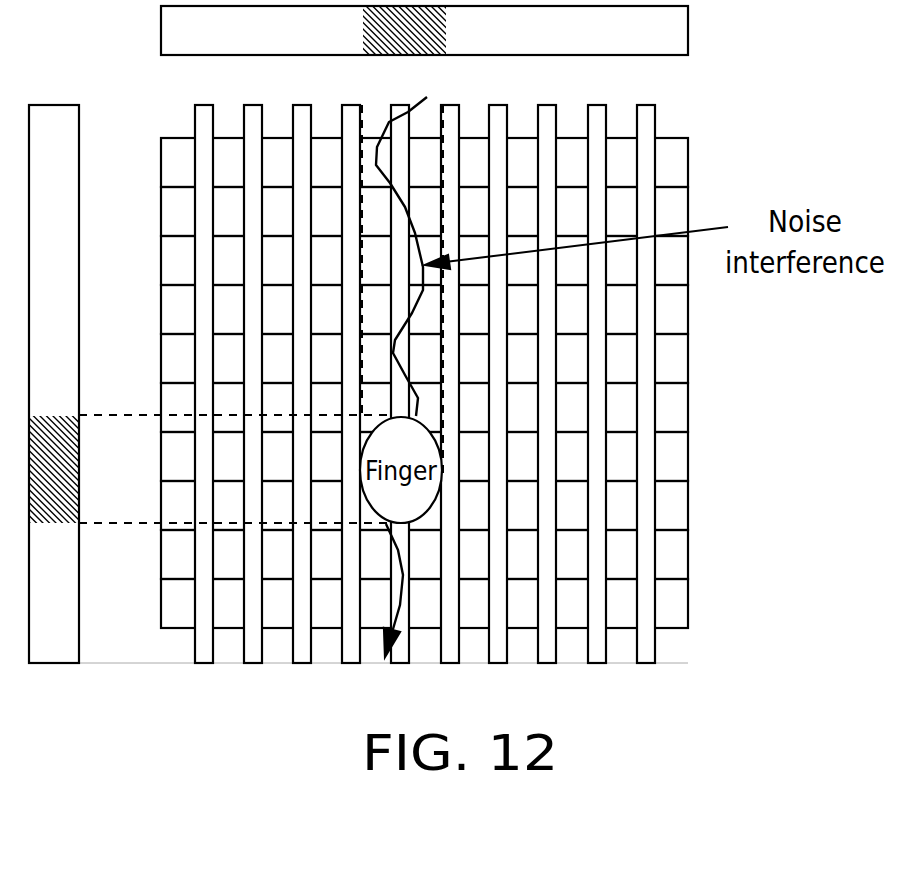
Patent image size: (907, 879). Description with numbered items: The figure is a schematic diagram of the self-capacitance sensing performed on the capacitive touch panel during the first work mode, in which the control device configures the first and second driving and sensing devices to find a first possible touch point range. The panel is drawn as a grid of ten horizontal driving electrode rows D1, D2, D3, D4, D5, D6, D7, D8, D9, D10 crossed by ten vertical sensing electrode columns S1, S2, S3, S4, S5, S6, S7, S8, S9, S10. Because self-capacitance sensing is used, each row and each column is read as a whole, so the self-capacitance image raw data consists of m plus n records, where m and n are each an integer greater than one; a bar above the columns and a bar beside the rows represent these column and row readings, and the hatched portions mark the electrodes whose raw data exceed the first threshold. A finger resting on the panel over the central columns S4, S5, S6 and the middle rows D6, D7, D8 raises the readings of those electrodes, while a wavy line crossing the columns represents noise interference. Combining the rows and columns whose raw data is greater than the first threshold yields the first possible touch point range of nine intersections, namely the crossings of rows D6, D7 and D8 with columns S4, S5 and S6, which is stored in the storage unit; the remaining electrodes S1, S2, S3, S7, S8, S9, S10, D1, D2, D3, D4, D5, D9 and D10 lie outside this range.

The sensing electrode S1 is at (209, 366).
The sensing electrode S2 is at (258, 366).
The sensing electrode S3 is at (307, 366).
The sensing electrode S4 is at (356, 366).
The sensing electrode S5 is at (405, 366).
The sensing electrode S6 is at (455, 366).
The sensing electrode S7 is at (503, 366).
The sensing electrode S8 is at (553, 366).
The sensing electrode S9 is at (602, 366).
The sensing electrode S10 is at (657, 366).
The driving electrode D1 is at (402, 162).
The driving electrode D2 is at (402, 211).
The driving electrode D3 is at (402, 260).
The driving electrode D4 is at (402, 309).
The driving electrode D5 is at (402, 358).
The driving electrode D6 is at (402, 407).
The driving electrode D7 is at (402, 456).
The driving electrode D8 is at (402, 505).
The driving electrode D9 is at (402, 554).
The driving electrode D10 is at (400, 603).